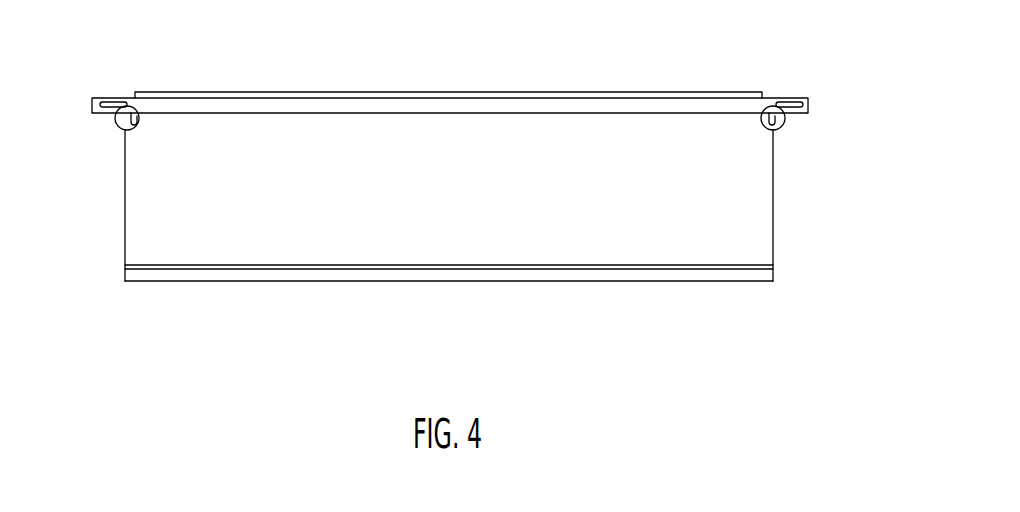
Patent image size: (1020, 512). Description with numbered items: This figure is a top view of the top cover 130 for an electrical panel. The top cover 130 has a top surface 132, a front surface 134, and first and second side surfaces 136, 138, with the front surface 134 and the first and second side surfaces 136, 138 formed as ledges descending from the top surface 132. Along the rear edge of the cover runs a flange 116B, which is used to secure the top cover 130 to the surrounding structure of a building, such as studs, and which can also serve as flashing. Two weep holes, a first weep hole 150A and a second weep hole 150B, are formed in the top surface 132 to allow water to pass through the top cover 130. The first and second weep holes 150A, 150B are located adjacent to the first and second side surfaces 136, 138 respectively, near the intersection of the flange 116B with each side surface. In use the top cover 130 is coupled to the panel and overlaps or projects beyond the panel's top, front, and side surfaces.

The top cover 130 is at (818, 78).
The flange 116B is at (725, 92).
The first weep hole 150A is at (115, 127).
The second weep hole 150B is at (786, 127).
The top surface 132 is at (712, 192).
The front surface 134 is at (497, 281).
The first side surface 136 is at (123, 205).
The second side surface 138 is at (777, 238).